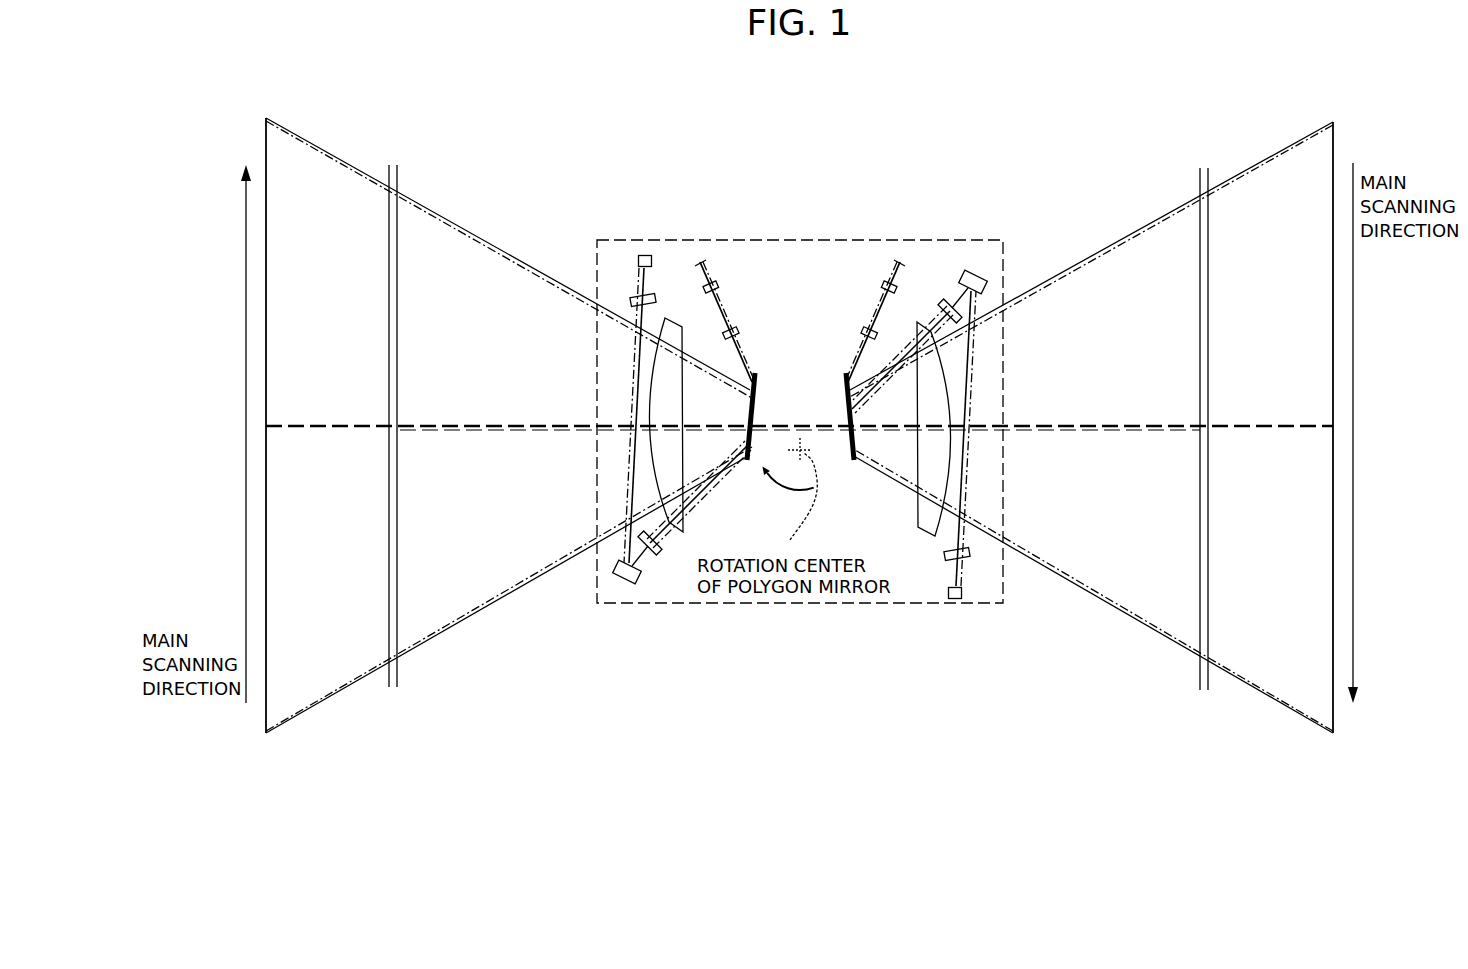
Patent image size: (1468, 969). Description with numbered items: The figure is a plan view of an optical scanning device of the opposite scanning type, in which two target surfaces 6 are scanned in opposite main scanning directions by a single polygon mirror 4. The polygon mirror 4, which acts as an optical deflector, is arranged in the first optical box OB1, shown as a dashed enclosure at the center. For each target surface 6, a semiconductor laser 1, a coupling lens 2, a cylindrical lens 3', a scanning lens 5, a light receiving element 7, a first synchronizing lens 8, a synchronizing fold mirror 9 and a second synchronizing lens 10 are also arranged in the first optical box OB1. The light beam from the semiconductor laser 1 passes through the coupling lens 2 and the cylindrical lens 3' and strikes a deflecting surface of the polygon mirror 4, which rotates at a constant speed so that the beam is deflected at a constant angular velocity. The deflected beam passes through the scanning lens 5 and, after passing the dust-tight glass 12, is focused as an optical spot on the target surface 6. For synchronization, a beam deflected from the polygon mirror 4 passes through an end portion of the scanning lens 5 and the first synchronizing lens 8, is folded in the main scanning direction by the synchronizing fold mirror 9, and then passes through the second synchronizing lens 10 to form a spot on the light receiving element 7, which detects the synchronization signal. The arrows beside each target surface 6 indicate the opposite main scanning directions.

The semiconductor laser 1 is at (702, 258).
The coupling lens 2 is at (715, 283).
The cylindrical lens 3' is at (800, 317).
The polygon mirror 4 is at (843, 487).
The scanning lens 5 is at (676, 322).
The target surface 6 is at (268, 182).
The light receiving element 7 is at (647, 255).
The first synchronizing lens 8 is at (665, 546).
The synchronizing fold mirror 9 is at (643, 578).
The second synchronizing lens 10 is at (636, 296).
The dust-tight glass 12 is at (398, 682).
The first optical box OB1 is at (595, 357).